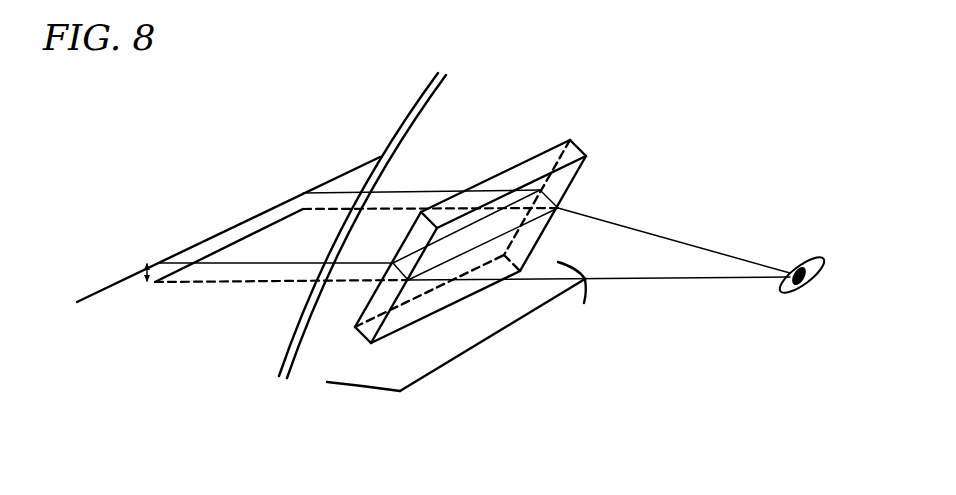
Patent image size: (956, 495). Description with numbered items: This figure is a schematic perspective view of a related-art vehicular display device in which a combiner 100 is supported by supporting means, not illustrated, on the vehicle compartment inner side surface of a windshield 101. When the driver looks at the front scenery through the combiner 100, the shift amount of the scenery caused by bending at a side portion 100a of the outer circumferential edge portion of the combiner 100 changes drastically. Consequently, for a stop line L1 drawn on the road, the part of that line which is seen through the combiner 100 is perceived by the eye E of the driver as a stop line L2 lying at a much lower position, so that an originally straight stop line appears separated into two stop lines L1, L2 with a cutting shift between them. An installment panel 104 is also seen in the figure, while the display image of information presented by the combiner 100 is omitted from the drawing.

The combiner 100 is at (488, 232).
The side portion 100a is at (562, 186).
The windshield 101 is at (413, 108).
The installment panel 104 is at (512, 308).
The eye E is at (807, 262).
The stop line L1 is at (113, 285).
The stop line L2 is at (233, 242).